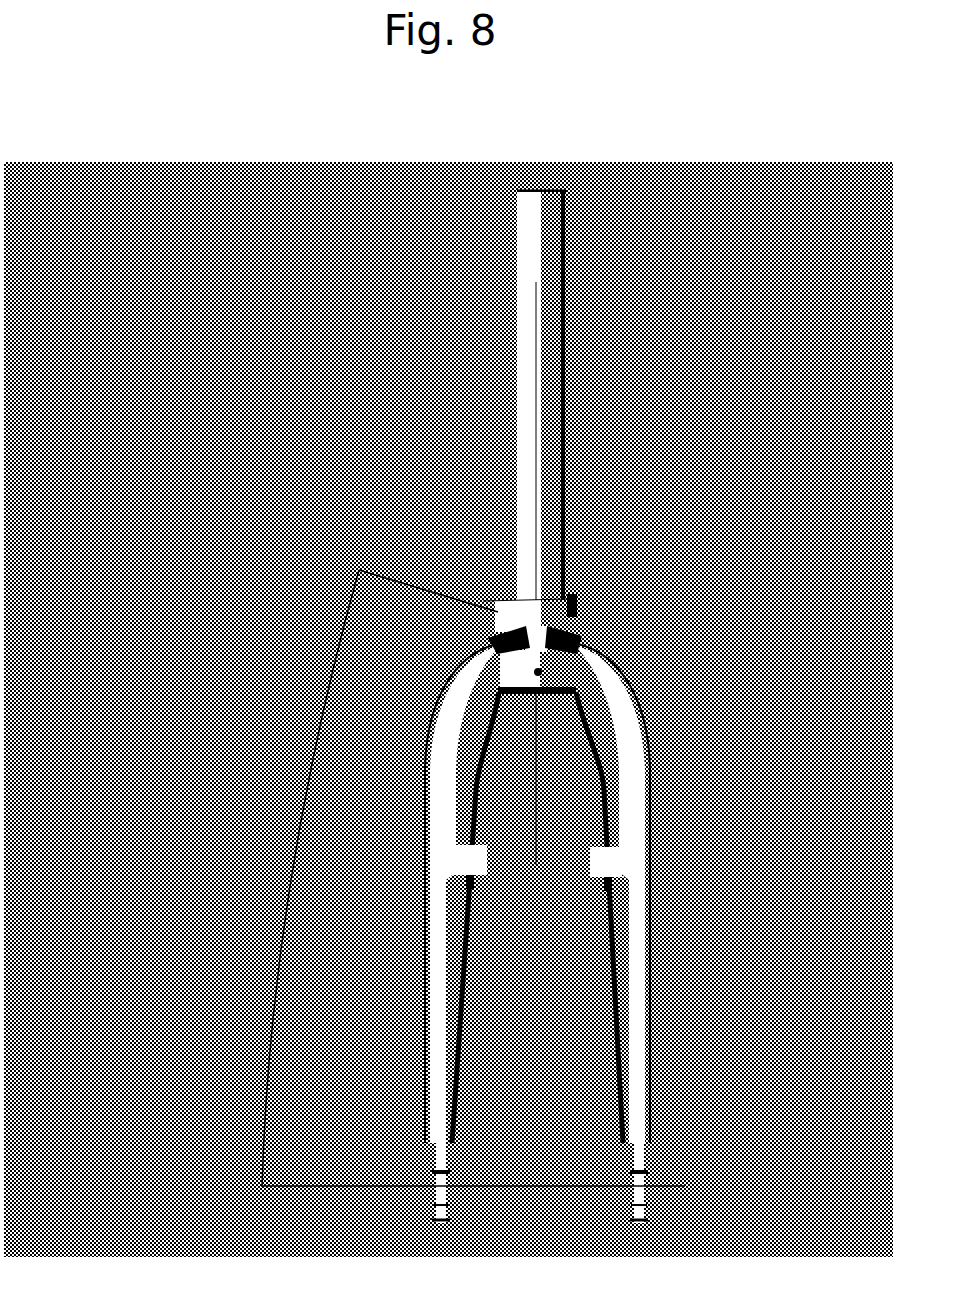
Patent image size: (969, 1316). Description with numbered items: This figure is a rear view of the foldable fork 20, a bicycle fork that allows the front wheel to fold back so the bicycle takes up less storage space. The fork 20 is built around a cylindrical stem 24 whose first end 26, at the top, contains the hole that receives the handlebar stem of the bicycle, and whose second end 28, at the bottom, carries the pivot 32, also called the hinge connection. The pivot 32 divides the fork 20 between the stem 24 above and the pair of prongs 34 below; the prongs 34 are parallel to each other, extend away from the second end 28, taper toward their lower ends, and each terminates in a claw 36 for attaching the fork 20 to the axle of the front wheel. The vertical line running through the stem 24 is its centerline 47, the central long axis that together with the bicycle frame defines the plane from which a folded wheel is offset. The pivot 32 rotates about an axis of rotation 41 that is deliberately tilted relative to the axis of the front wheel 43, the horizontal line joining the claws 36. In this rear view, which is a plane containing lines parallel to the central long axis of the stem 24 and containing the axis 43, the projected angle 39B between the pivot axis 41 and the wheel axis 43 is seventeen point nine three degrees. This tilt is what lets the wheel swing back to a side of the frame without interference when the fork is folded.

The foldable fork 20 is at (215, 138).
The stem 24 is at (505, 362).
The first end 26 is at (535, 193).
The second end 28 is at (530, 598).
The pivot 32 is at (577, 627).
The prongs 34 is at (450, 932).
The claw 36 is at (440, 1172).
The projected angle 39B is at (313, 727).
The axis of rotation 41 is at (400, 583).
The axis of a front wheel 43 is at (539, 1192).
The centerline of the stem 47 is at (537, 372).